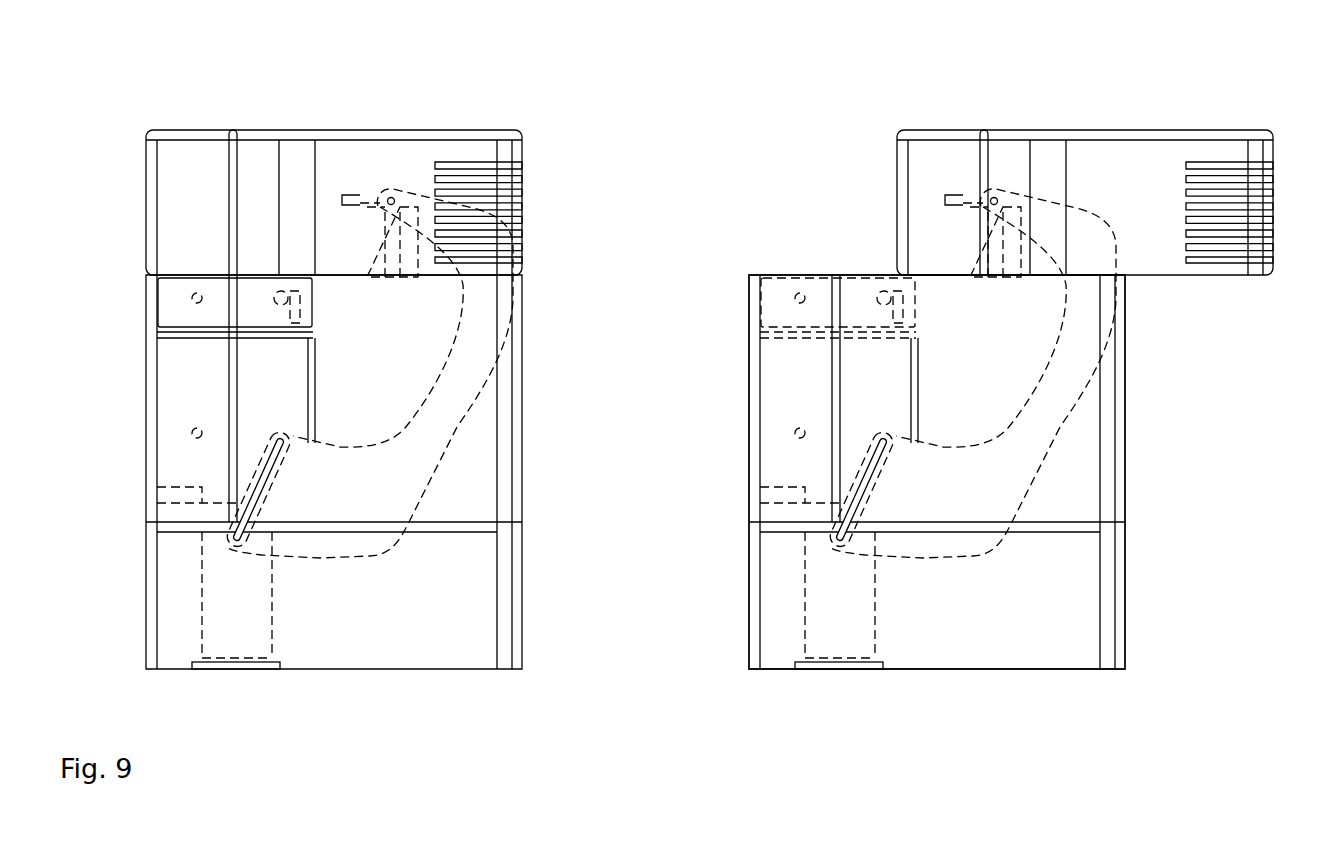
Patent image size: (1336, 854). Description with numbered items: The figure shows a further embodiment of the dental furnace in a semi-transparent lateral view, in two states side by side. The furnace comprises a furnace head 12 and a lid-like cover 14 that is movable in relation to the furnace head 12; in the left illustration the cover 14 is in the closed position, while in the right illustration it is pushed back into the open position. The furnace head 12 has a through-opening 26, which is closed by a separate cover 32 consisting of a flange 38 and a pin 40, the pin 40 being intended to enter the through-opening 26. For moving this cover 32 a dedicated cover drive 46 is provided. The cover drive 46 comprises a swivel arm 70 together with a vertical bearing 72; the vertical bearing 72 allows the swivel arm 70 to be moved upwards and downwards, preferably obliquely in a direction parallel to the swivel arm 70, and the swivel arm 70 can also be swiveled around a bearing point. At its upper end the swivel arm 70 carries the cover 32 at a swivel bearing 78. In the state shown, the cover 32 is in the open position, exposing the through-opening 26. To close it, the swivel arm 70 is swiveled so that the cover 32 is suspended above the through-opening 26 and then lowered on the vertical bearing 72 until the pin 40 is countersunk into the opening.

The furnace head 12 is at (182, 384).
The cover 14 is at (505, 151).
The through-opening 26 is at (796, 254).
The cover 32 is at (378, 217).
The flange 38 is at (353, 194).
The pin 40 is at (408, 250).
The cover drive 46 is at (472, 342).
The swivel arm 70 is at (447, 395).
The vertical bearing 72 is at (230, 572).
The swivel bearing 78 is at (994, 197).